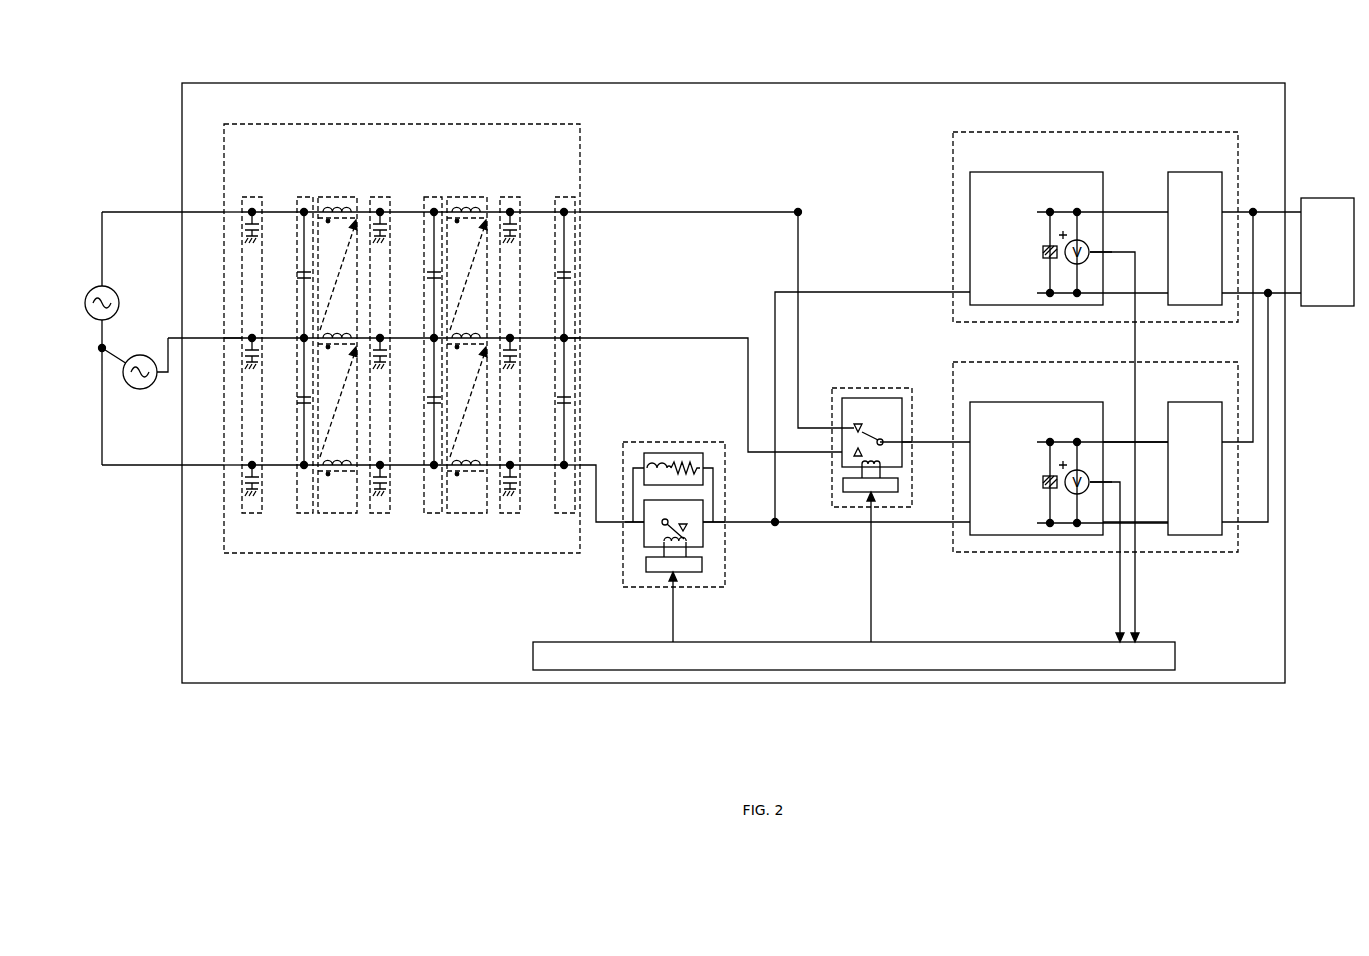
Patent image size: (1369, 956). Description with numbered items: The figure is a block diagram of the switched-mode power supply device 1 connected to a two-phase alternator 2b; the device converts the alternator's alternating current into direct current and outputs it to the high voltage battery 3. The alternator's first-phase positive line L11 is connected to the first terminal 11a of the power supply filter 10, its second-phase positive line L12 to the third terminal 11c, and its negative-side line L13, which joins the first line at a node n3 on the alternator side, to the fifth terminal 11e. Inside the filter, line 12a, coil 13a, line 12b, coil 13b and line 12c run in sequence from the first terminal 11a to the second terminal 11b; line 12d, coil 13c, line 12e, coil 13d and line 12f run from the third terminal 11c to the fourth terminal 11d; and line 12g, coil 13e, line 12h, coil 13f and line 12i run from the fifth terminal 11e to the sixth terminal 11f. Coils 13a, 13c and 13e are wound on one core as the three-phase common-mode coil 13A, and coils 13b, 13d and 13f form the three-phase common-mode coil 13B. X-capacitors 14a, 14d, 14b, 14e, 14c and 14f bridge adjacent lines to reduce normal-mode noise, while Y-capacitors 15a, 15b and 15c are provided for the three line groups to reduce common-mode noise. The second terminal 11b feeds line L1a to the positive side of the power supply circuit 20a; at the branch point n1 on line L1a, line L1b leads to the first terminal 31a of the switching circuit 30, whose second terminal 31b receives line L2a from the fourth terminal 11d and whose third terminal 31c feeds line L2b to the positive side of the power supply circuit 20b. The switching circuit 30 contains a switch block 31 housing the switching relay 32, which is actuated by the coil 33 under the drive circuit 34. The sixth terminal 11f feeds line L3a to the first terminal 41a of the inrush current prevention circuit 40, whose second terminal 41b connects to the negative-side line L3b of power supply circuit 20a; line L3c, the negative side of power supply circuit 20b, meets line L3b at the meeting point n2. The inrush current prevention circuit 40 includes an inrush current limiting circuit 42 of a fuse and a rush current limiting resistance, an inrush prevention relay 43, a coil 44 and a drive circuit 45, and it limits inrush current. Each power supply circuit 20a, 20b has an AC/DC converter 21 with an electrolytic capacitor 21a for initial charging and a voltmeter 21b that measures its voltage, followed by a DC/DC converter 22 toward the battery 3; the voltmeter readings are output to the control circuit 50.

The switched-mode power supply device 1 is at (717, 83).
The high voltage battery 3 is at (1325, 198).
The power supply filter 10 is at (378, 124).
The two-phase alternator 2b is at (148, 298).
The node n3 is at (100, 349).
The line L11 is at (156, 210).
The line L12 is at (168, 358).
The line L13 is at (152, 466).
The first terminal 11a is at (224, 210).
The second terminal 11b is at (580, 210).
The third terminal 11c is at (224, 336).
The fourth terminal 11d is at (580, 336).
The fifth terminal 11e is at (224, 463).
The sixth terminal 11f is at (580, 463).
The line 12a is at (262, 210).
The line 12b is at (420, 210).
The line 12c is at (520, 210).
The line 12d is at (262, 336).
The line 12e is at (420, 336).
The line 12f is at (520, 336).
The line 12g is at (262, 463).
The line 12h is at (420, 463).
The line 12i is at (520, 463).
The coil 13a is at (340, 208).
The coil 13b is at (468, 208).
The coil 13c is at (340, 336).
The coil 13d is at (468, 336).
The coil 13e is at (340, 461).
The coil 13f is at (469, 461).
The three-phase common-mode coil 13A is at (330, 513).
The three-phase common-mode coil 13B is at (465, 513).
The X-capacitor 14a is at (299, 272).
The X-capacitor 14b is at (429, 272).
The X-capacitor 14c is at (559, 272).
The X-capacitor 14d is at (299, 399).
The X-capacitor 14e is at (429, 399).
The X-capacitor 14f is at (559, 399).
The Y-capacitor 15a is at (255, 513).
The Y-capacitor 15b is at (385, 513).
The Y-capacitor 15c is at (515, 513).
The line L1a is at (701, 210).
The line L1b is at (797, 266).
The line L2a is at (669, 336).
The line L2b is at (920, 442).
The line L3a is at (615, 524).
The line L3b is at (774, 300).
The line L3c is at (900, 524).
The branch point n1 is at (800, 215).
The meeting point n2 is at (776, 524).
The switching circuit 30 is at (874, 430).
The switch 31 is at (870, 418).
The first terminal 31a is at (852, 428).
The second terminal 31b is at (852, 455).
The third terminal 31c is at (905, 440).
The switching relay 32 is at (878, 438).
The coil 33 is at (882, 468).
The drive circuit 34 is at (898, 485).
The inrush current prevention circuit 40 is at (692, 522).
The first terminal 41a is at (625, 520).
The second terminal 41b is at (725, 520).
The inrush current limiting circuit 42 is at (660, 452).
The inrush prevention relay 43 is at (642, 562).
The coil 44 is at (703, 537).
The drive circuit 45 is at (667, 548).
The power supply circuit 20a is at (1090, 132).
The power supply circuit 20b is at (1090, 362).
The AC/DC converter 21 is at (1040, 172).
The electrolytic capacitor 21a is at (1043, 258).
The voltmeter 21b is at (1075, 240).
The DC/DC converter 22 is at (1195, 172).
The control circuit 50 is at (1175, 650).